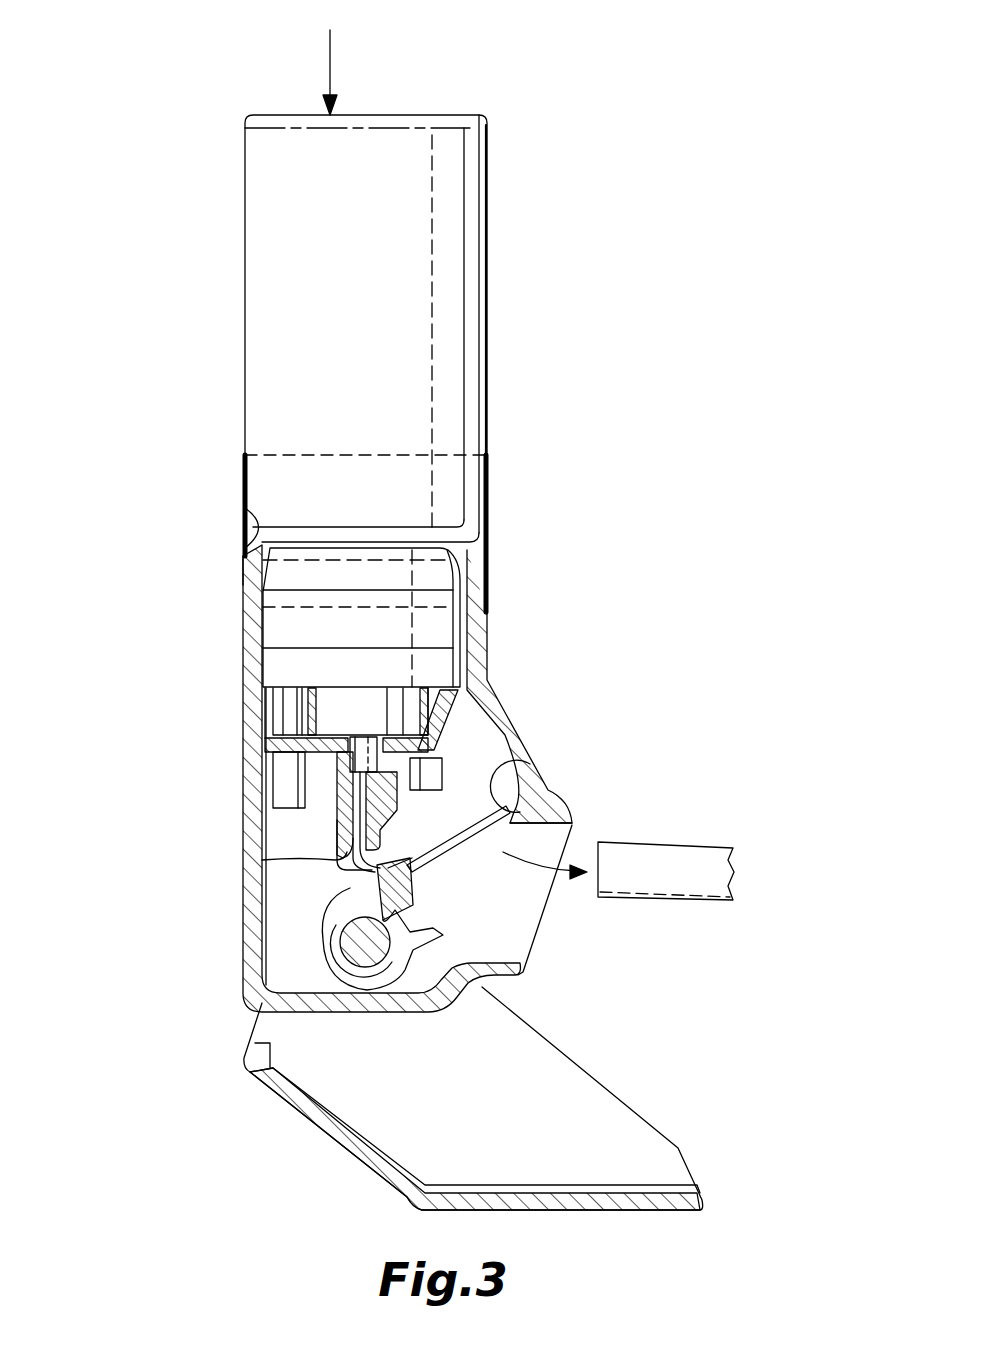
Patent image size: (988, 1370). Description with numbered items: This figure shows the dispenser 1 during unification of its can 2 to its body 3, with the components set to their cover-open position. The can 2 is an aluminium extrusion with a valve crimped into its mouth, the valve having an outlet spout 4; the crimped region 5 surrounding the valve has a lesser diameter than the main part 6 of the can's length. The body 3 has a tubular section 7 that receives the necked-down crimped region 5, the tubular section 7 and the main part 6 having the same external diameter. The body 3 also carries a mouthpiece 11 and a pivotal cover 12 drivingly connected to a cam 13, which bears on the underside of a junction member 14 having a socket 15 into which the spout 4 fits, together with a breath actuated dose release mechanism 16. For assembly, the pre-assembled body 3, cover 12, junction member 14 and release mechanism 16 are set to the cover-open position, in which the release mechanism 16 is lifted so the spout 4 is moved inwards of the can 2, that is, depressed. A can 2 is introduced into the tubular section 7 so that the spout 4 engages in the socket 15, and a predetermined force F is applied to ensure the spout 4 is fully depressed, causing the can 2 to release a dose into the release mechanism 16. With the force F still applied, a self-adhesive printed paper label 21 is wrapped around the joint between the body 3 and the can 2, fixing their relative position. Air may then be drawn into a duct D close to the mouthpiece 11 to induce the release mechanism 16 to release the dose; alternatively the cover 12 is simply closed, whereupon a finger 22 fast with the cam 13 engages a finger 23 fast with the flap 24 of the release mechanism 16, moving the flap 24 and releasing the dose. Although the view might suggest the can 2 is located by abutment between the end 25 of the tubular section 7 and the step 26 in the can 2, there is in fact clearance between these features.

The dispenser 1 is at (515, 318).
The can 2 is at (332, 277).
The body 3 is at (250, 826).
The outlet spout 4 is at (352, 748).
The crimped region 5 is at (308, 668).
The main part 6 is at (487, 218).
The tubular section 7 is at (487, 563).
The mouthpiece 11 is at (540, 908).
The pivotal cover 12 is at (600, 1202).
The cam 13 is at (340, 893).
The junction member 14 is at (262, 775).
The socket 15 is at (342, 788).
The breath actuated dose release mechanism 16 is at (500, 833).
The printed paper label 21 is at (243, 476).
The finger 22 is at (443, 937).
The finger 23 is at (437, 897).
The flap 24 is at (508, 760).
The end 25 is at (243, 568).
The step 26 is at (243, 506).
The predetermined force F is at (330, 64).
The duct D is at (657, 860).